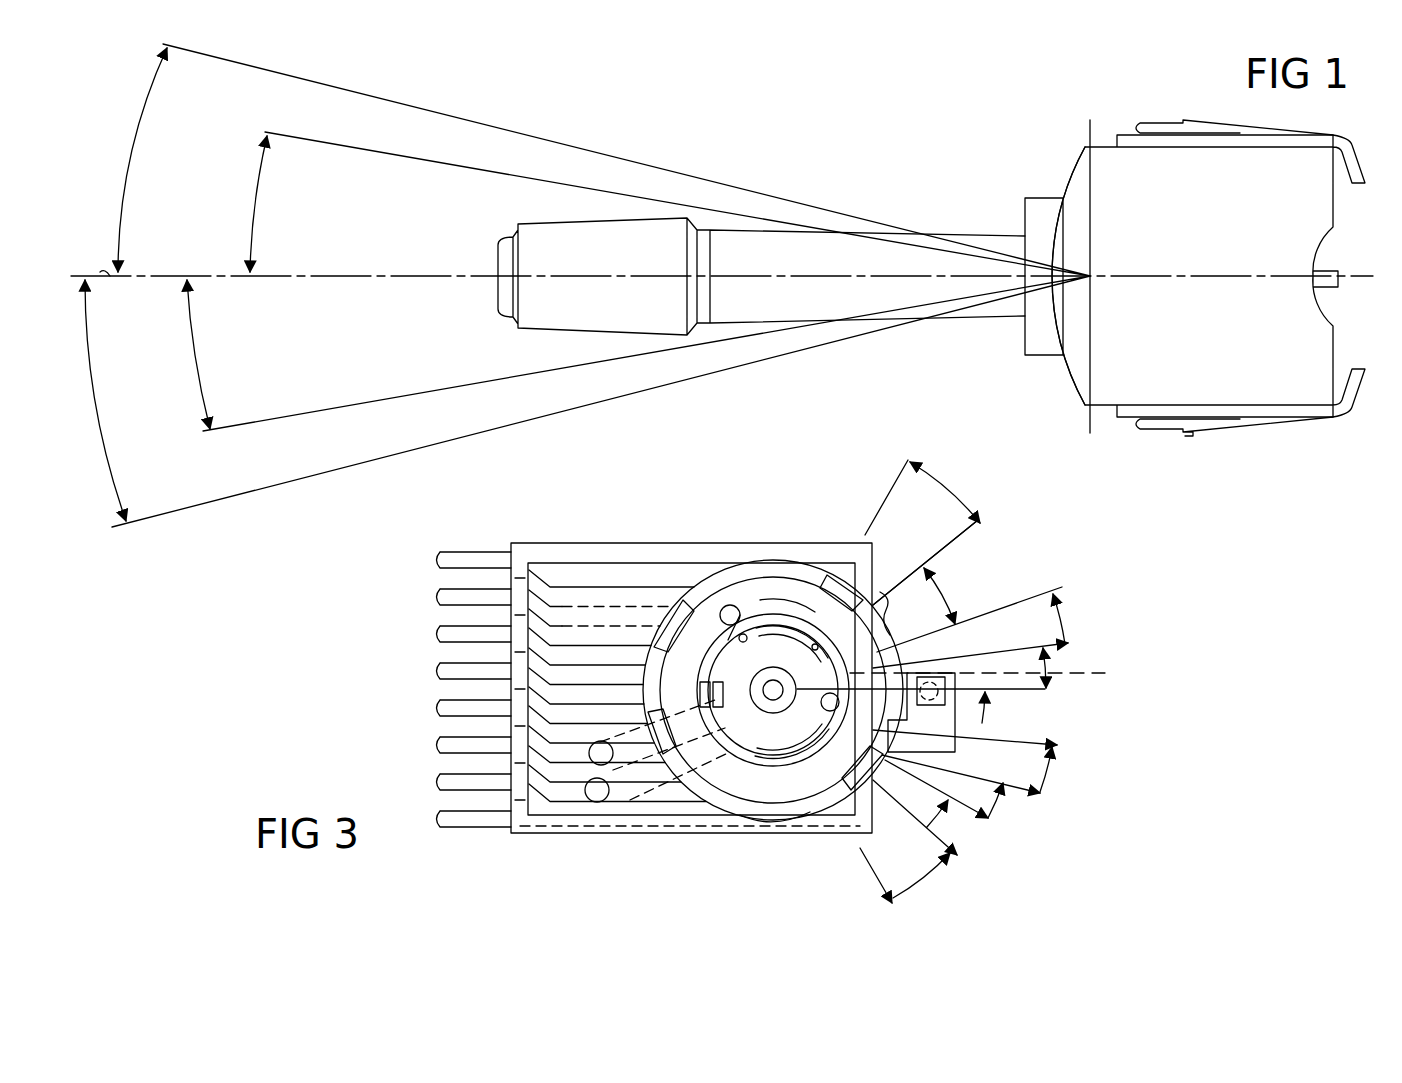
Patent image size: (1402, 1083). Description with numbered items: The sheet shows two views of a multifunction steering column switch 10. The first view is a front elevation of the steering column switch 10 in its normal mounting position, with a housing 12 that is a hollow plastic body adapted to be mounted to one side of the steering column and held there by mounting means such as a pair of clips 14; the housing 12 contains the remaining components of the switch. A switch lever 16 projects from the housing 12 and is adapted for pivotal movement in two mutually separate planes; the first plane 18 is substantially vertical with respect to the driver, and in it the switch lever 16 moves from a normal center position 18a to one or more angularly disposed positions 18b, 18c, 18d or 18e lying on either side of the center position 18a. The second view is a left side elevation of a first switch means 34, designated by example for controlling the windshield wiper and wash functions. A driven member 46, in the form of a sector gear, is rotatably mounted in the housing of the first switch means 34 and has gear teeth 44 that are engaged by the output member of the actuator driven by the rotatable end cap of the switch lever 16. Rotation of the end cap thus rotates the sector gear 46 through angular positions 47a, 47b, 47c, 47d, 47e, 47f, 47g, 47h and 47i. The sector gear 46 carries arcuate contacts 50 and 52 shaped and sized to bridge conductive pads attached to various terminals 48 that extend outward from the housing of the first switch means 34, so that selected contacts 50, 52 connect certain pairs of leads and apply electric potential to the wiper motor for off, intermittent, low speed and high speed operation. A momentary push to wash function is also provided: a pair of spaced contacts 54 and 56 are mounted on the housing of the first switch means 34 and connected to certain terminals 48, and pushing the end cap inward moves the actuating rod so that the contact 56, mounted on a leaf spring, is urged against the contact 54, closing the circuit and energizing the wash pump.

In FIG. 1, the multifunction steering column switch 10 is at (980, 185).
In FIG. 1, the housing 12 is at (1110, 170).
In FIG. 1, the clips 14 is at (1190, 122).
In FIG. 1, the switch lever 16 is at (800, 255).
In FIG. 1, the first plane 18 is at (512, 428).
In FIG. 1, the normal center position 18a is at (108, 274).
In FIG. 1, the angularly disposed position 18b is at (133, 142).
In FIG. 1, the angularly disposed position 18c is at (254, 208).
In FIG. 1, the angularly disposed position 18d is at (94, 406).
In FIG. 1, the angularly disposed position 18e is at (196, 360).
In FIG. 3, the first switch means 34 is at (616, 538).
In FIG. 3, the gear teeth 44 is at (890, 606).
In FIG. 3, the driven member 46 is at (818, 580).
In FIG. 3, the angular position 47a is at (945, 488).
In FIG. 3, the angular position 47b is at (955, 595).
In FIG. 3, the angular position 47c is at (1062, 630).
In FIG. 3, the angular position 47d is at (1052, 668).
In FIG. 3, the angular position 47e is at (988, 712).
In FIG. 3, the angular position 47f is at (1047, 775).
In FIG. 3, the angular position 47g is at (1000, 805).
In FIG. 3, the angular position 47h is at (940, 813).
In FIG. 3, the angular position 47i is at (920, 883).
In FIG. 3, the terminals 48 is at (470, 553).
In FIG. 3, the arcuate contact 50 is at (725, 585).
In FIG. 3, the arcuate contact 52 is at (770, 808).
In FIG. 3, the contact 54 is at (1040, 745).
In FIG. 3, the contact 56 is at (1105, 673).